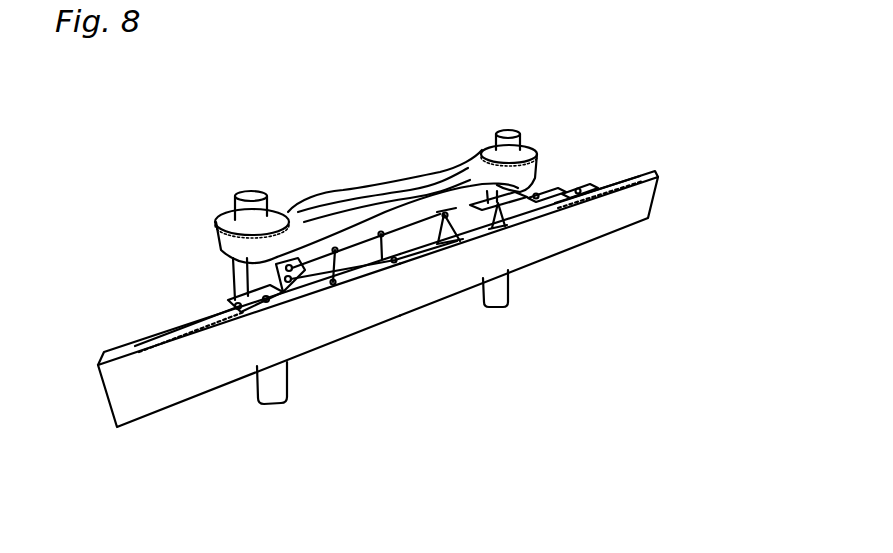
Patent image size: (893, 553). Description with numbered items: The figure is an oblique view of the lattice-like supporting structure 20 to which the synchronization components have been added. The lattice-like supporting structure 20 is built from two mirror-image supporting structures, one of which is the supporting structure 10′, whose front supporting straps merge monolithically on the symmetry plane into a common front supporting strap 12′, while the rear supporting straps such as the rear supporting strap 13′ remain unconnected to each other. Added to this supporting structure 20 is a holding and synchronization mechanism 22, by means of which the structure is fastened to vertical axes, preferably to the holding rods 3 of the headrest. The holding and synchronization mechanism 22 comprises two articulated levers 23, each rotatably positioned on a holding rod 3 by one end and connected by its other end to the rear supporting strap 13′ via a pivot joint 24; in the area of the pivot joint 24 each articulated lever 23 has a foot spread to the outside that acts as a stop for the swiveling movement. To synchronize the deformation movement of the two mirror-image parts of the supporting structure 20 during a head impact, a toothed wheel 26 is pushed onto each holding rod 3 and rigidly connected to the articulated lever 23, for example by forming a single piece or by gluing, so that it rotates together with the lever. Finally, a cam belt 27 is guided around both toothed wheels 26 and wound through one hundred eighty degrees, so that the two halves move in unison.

The holding rod 3 is at (278, 405).
The supporting structure 10′ is at (150, 421).
The front supporting strap 12′ is at (205, 373).
The rear supporting strap 13′ is at (180, 322).
The lattice-like supporting structure 20 is at (420, 330).
The holding and synchronization mechanism 22 is at (322, 168).
The articulated lever 23 is at (240, 290).
The pivot joint 24 is at (291, 270).
The toothed wheel 26 is at (222, 212).
The cam belt 27 is at (423, 172).